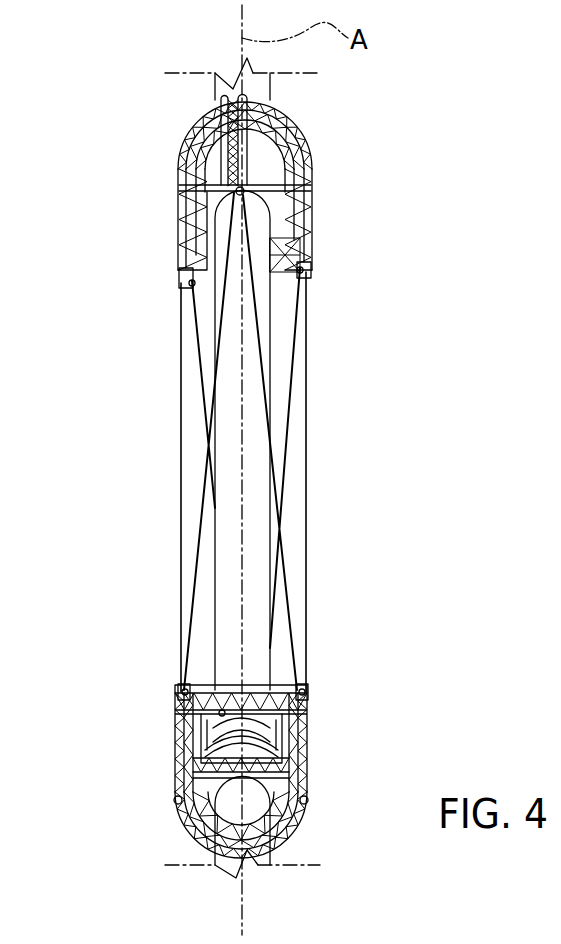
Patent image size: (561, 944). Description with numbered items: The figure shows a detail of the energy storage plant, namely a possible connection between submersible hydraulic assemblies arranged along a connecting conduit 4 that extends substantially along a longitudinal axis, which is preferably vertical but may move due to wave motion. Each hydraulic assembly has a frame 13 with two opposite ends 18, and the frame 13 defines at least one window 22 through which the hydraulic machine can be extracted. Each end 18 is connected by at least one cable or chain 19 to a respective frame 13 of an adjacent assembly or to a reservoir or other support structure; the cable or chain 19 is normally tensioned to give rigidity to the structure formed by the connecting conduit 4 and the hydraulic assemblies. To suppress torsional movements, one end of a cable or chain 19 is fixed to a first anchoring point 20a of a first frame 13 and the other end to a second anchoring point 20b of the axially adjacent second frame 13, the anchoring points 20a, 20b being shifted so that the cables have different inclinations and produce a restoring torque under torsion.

The connecting conduit 4 is at (258, 294).
The frame 13 is at (323, 172).
The end 18 is at (328, 792).
The cable or chain 19 is at (213, 450).
The first anchoring point 20a is at (300, 207).
The second anchoring point 20b is at (182, 700).
The window 22 is at (173, 186).